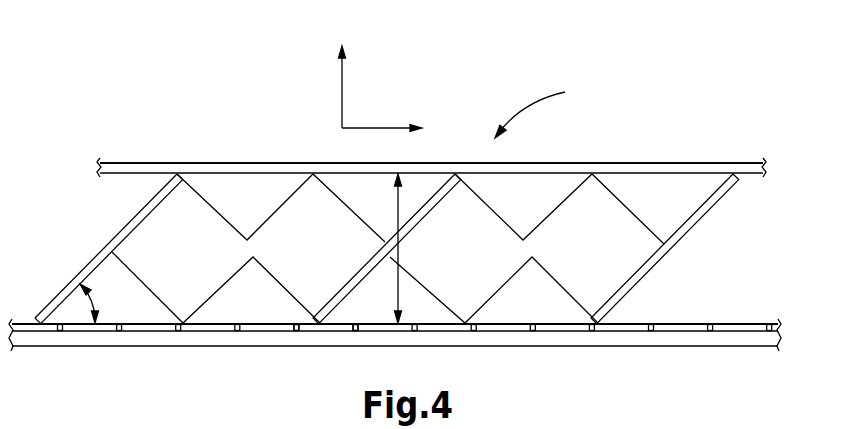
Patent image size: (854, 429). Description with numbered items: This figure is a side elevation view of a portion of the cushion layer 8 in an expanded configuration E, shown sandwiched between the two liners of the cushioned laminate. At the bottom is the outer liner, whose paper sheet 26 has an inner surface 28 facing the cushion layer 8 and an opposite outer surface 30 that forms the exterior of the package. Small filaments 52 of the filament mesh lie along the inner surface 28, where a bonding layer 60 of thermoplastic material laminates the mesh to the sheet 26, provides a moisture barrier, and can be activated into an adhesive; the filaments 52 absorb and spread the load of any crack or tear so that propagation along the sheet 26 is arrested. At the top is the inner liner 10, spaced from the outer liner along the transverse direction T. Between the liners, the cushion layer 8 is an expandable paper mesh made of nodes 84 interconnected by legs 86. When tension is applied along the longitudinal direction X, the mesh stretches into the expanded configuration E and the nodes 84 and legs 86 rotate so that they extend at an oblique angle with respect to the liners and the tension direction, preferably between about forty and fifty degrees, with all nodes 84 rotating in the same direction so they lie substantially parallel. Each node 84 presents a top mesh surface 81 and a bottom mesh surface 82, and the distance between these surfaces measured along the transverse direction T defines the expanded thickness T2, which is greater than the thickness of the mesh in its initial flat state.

The cushion layer 8 is at (431, 207).
The inner liner 10 is at (639, 171).
The sheet 26 is at (408, 335).
The inner surface 28 is at (677, 332).
The outer surface 30 is at (700, 347).
The filaments 52 is at (348, 330).
The bonding layer 60 is at (513, 330).
The top mesh surface 81 is at (127, 207).
The bottom mesh surface 82 is at (138, 231).
The nodes 84 is at (90, 258).
The legs 86 is at (187, 213).
The expanded thickness T2 is at (400, 250).
The transverse direction T is at (342, 75).
The longitudinal direction X is at (393, 131).
The expanded configuration E is at (539, 110).